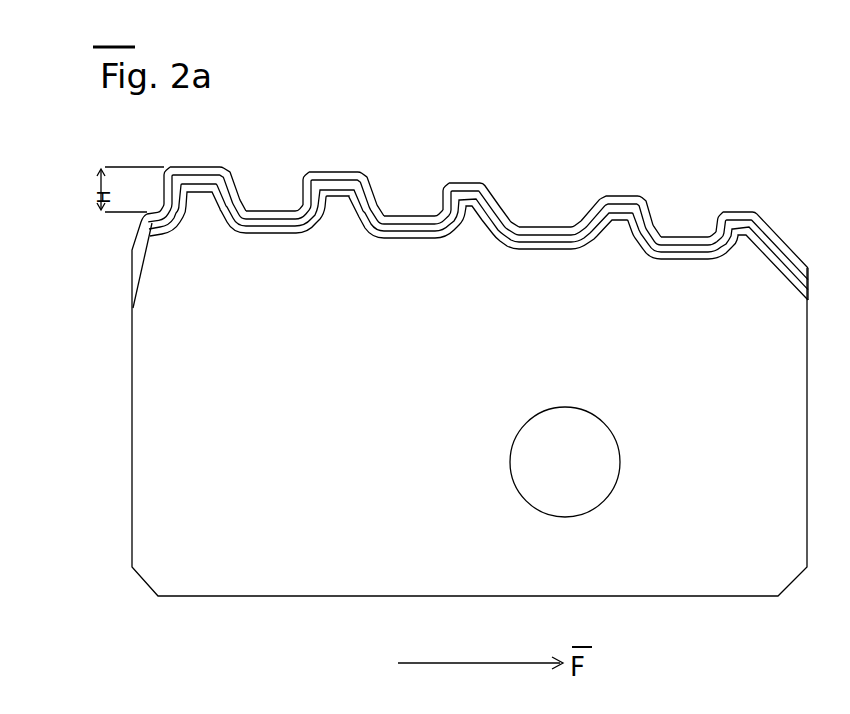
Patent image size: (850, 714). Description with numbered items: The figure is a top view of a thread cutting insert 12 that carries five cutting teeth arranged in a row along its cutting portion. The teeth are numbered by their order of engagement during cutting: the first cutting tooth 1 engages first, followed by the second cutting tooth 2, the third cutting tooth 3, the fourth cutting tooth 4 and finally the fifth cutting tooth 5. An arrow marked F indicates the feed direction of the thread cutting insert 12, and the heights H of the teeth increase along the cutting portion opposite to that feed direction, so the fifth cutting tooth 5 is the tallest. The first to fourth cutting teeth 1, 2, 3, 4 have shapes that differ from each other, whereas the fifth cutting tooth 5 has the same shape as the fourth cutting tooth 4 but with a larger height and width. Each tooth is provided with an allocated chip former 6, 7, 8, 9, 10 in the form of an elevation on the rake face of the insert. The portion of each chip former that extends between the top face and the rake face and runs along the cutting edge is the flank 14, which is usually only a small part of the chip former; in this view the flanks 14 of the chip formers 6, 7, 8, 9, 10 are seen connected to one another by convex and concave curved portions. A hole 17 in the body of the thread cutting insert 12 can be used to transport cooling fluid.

The first cutting tooth 1 is at (730, 210).
The second cutting tooth 2 is at (617, 195).
The third cutting tooth 3 is at (457, 178).
The fourth cutting tooth 4 is at (332, 170).
The fifth cutting tooth 5 is at (208, 166).
The chip former 6 is at (745, 240).
The chip former 7 is at (605, 243).
The chip former 8 is at (477, 232).
The chip former 9 is at (338, 220).
The chip former 10 is at (198, 214).
The thread cutting insert 12 is at (232, 612).
The flank 14 is at (195, 187).
The hole 17 is at (578, 484).